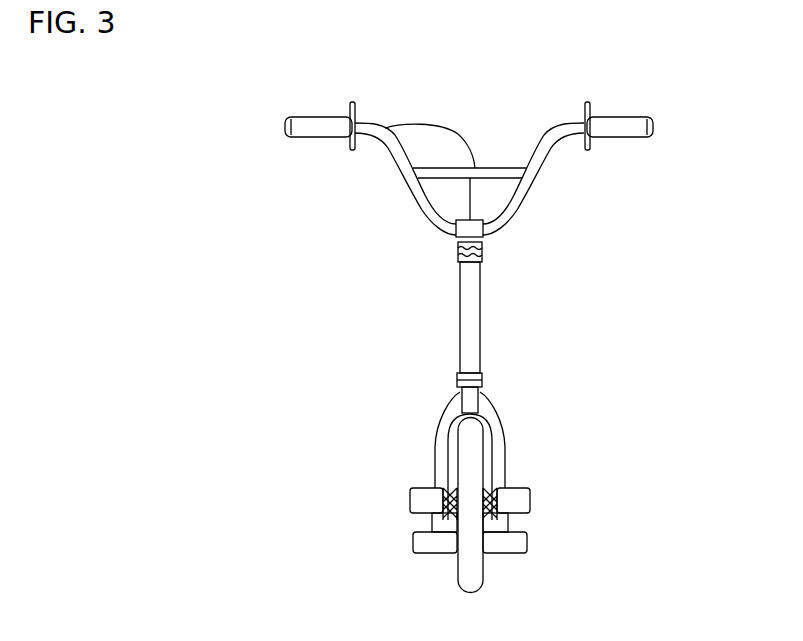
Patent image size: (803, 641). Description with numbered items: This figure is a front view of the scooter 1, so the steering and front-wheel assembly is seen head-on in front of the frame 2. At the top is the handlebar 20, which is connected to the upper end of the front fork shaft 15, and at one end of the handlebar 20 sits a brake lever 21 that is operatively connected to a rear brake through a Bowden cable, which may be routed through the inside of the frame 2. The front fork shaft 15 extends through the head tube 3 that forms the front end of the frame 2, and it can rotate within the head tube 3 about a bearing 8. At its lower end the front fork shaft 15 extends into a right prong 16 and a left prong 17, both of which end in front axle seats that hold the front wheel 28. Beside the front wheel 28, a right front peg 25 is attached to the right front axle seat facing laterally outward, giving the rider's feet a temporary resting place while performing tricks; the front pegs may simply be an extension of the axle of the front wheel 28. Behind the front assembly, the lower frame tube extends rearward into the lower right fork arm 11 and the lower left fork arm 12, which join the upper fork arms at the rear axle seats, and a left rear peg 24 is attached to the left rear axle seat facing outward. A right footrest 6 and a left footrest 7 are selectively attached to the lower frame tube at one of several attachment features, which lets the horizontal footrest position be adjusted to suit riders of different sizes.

The scooter 1 is at (650, 220).
The frame 2 is at (483, 318).
The head tube 3 is at (470, 322).
The right footrest 6 is at (425, 540).
The left footrest 7 is at (525, 540).
The bearing 8 is at (470, 252).
The lower right fork arm 11 is at (443, 520).
The lower left fork arm 12 is at (498, 523).
The front fork shaft 15 is at (470, 390).
The right prong 16 is at (467, 456).
The left prong 17 is at (493, 427).
The handlebar 20 is at (488, 170).
The brake lever 21 is at (333, 128).
The left rear peg 24 is at (521, 497).
The right front peg 25 is at (420, 496).
The front wheel 28 is at (472, 582).